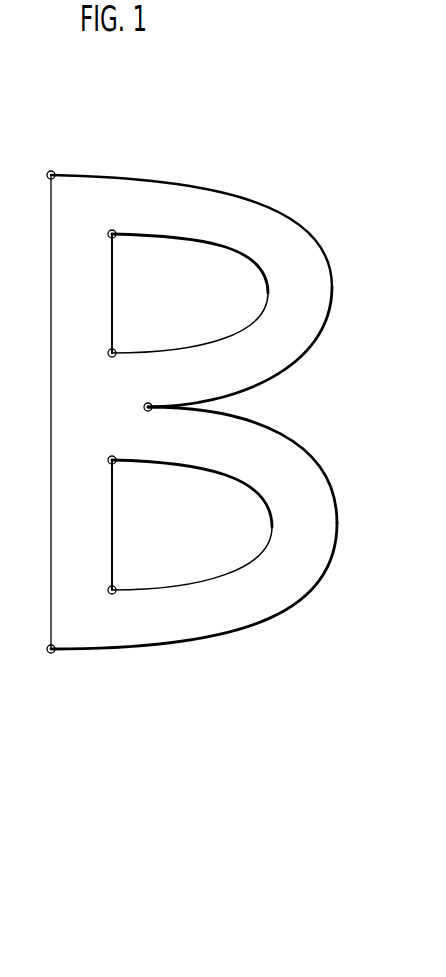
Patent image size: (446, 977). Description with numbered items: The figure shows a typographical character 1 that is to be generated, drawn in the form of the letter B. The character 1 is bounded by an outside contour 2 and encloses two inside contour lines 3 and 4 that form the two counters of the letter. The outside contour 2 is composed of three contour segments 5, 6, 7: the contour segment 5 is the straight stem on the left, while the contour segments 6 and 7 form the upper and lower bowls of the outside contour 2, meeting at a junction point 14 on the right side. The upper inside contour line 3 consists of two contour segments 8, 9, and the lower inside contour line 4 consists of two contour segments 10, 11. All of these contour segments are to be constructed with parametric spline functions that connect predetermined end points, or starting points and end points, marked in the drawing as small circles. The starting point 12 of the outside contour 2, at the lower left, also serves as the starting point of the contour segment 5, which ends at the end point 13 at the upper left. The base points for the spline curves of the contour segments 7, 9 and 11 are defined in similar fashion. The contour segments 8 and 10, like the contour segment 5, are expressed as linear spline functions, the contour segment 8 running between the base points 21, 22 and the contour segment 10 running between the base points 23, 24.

The character 1 is at (340, 268).
The outside contour 2 is at (337, 522).
The inside contour line 3 is at (222, 238).
The inside contour line 4 is at (160, 591).
The contour segment 5 is at (50, 290).
The contour segment 6 is at (172, 178).
The contour segment 7 is at (322, 575).
The contour segment 8 is at (114, 305).
The contour segment 9 is at (213, 347).
The contour segment 10 is at (110, 541).
The contour segment 11 is at (250, 562).
The starting point 12 is at (48, 653).
The end point 13 is at (51, 171).
The junction point of bowls 14 is at (145, 410).
The base point 21 is at (108, 231).
The base point 22 is at (110, 357).
The base point 23 is at (116, 465).
The base point 24 is at (110, 595).